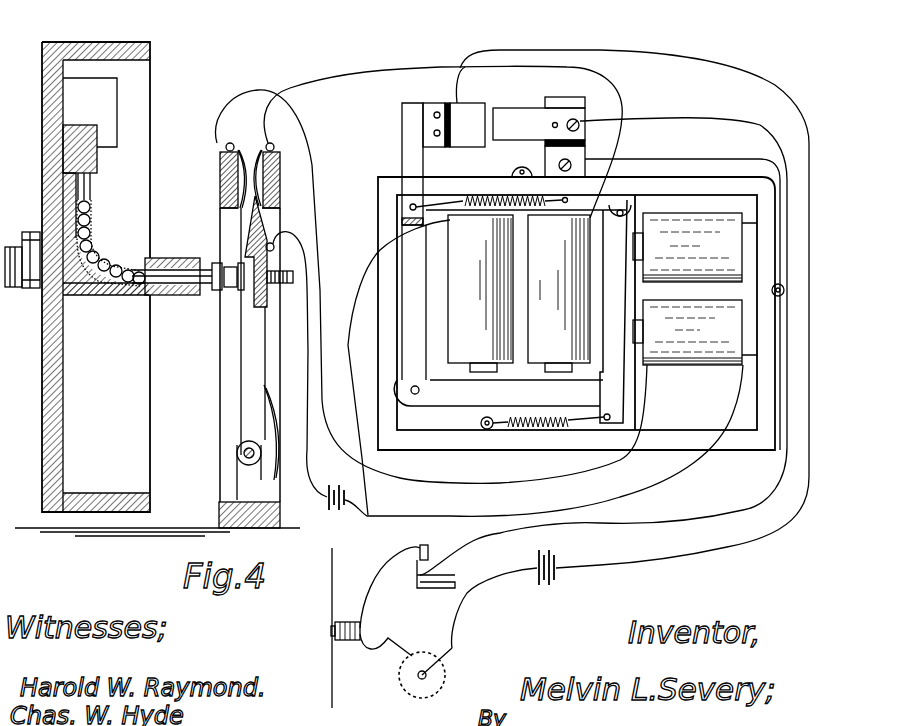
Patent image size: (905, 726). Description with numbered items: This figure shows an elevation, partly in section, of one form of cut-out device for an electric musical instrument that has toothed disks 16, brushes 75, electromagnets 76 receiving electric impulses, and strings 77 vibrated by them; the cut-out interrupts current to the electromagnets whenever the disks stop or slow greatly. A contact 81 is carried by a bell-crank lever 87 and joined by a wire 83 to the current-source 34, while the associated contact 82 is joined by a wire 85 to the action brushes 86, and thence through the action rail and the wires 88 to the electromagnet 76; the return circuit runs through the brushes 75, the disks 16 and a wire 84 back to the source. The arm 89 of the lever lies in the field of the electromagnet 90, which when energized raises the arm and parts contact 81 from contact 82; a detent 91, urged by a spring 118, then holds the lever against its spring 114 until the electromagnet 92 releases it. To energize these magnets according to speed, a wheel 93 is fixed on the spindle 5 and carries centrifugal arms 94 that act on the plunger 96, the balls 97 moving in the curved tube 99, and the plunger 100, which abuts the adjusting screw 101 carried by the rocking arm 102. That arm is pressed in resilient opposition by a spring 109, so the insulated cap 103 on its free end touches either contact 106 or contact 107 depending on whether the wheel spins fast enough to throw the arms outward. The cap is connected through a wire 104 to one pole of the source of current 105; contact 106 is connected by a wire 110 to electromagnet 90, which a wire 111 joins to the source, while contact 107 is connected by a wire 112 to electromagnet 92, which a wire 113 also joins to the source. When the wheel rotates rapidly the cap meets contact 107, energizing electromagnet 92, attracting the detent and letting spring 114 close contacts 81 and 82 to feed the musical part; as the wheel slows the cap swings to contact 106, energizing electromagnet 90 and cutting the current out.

The wheel 93 is at (63, 400).
The centrifugal arms 94 is at (105, 128).
The plunger 96 is at (92, 175).
The balls 97 is at (94, 256).
The curved tube 99 is at (90, 210).
The spindle 5 is at (25, 292).
The plunger 100 is at (178, 296).
The contact screw 101 is at (292, 278).
The rocking arm 102 is at (241, 364).
The cap 103 is at (245, 221).
The wire 104 is at (314, 440).
The source of current 105 is at (343, 514).
The contact 106 is at (268, 190).
The contact 107 is at (220, 180).
The spring 109 is at (265, 408).
The wire 110 is at (364, 70).
The wire 111 is at (348, 280).
The wire 112 is at (461, 488).
The wire 113 is at (618, 498).
The spring 114 is at (530, 207).
The spring 118 is at (538, 430).
The contact 81 is at (454, 136).
The contact 82 is at (626, 137).
The bell-crank lever 87 is at (413, 297).
The arm 89 is at (468, 400).
The electromagnet 90 is at (519, 293).
The detent 91 is at (615, 382).
The electromagnet 92 is at (692, 366).
The wire 83 is at (690, 557).
The wire 85 is at (608, 525).
The wire 84 is at (462, 592).
The current source 34 is at (547, 587).
The action brushes 86 is at (415, 570).
The wires 88 is at (375, 582).
The electromagnet 76 is at (345, 644).
The brushes 75 is at (405, 652).
The toothed disks 16 is at (402, 691).
The strings 77 is at (331, 605).